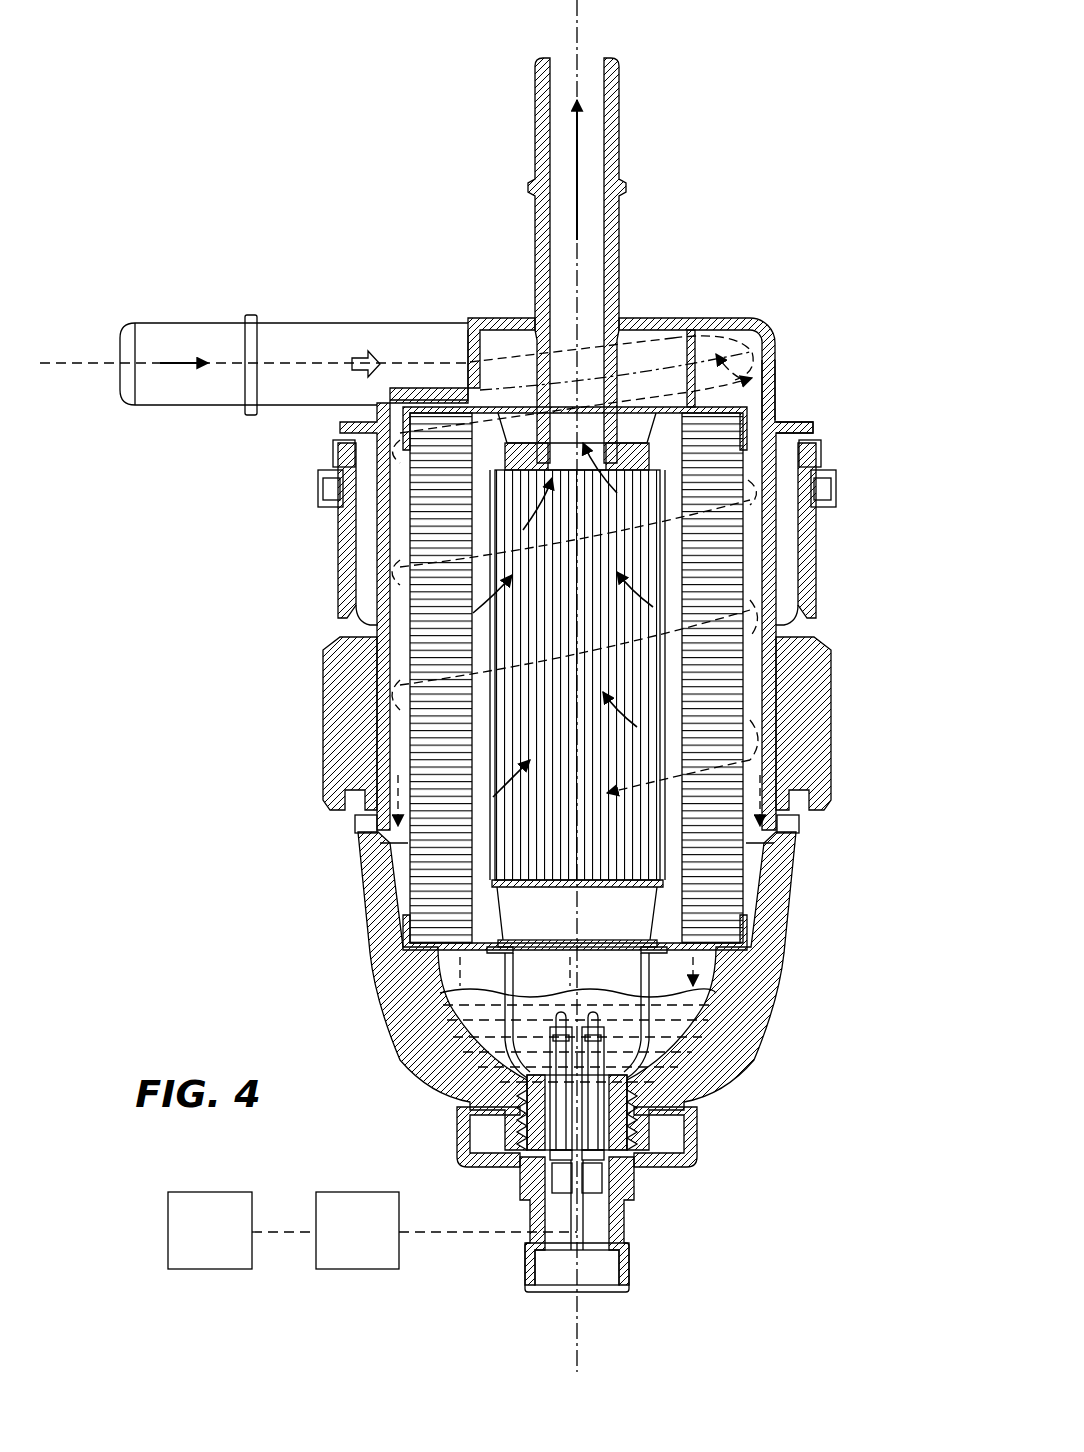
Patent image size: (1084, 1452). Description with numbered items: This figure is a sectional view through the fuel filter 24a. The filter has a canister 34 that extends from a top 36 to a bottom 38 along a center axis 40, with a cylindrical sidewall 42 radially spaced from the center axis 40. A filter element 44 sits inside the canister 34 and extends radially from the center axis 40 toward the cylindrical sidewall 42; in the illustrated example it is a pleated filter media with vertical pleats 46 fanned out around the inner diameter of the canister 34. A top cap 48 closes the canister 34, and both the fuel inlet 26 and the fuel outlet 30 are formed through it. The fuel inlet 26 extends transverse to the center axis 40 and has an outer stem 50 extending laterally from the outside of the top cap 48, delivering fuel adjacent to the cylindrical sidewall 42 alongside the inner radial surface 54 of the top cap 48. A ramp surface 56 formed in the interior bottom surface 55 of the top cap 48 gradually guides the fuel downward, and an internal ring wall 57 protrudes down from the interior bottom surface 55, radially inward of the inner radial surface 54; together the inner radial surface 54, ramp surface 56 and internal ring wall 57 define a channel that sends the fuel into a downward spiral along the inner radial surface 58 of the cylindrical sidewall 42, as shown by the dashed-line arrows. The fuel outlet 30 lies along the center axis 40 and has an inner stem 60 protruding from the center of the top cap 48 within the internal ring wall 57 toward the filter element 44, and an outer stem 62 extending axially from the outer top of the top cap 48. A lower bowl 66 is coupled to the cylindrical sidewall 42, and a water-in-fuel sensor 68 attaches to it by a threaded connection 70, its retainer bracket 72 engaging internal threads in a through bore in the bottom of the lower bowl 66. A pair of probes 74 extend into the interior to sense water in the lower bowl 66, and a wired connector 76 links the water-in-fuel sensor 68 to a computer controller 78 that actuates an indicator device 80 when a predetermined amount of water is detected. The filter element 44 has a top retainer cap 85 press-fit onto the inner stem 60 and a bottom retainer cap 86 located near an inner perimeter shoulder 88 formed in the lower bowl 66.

The fuel filter 24a is at (905, 325).
The fuel inlet 26 is at (307, 318).
The fuel outlet 30 is at (634, 262).
The canister 34 is at (778, 568).
The top 36 is at (752, 312).
The bottom 38 is at (503, 1202).
The center axis 40 is at (588, 16).
The cylindrical sidewall 42 is at (800, 736).
The filter element 44 is at (720, 691).
The vertical pleats 46 is at (636, 848).
The top cap 48 is at (778, 374).
The outer stem 50 is at (371, 322).
The inner radial surface 54 is at (766, 399).
The interior bottom surface 55 is at (500, 327).
The ramp surface 56 is at (760, 366).
The internal ring wall 57 is at (714, 340).
The inner radial surface 58 is at (765, 576).
The inner stem 60 is at (480, 401).
The outer stem 62 is at (622, 222).
The lower bowl 66 is at (765, 987).
The water-in-fuel sensor 68 is at (540, 1052).
The threaded connection 70 is at (628, 1113).
The retainer bracket 72 is at (642, 1160).
The probes 74 is at (550, 1038).
The wired connector 76 is at (580, 1214).
The computer controller 78 is at (340, 1270).
The indicator device 80 is at (190, 1270).
The top retainer cap 85 is at (510, 393).
The bottom retainer cap 86 is at (403, 943).
The inner perimeter shoulder 88 is at (437, 950).